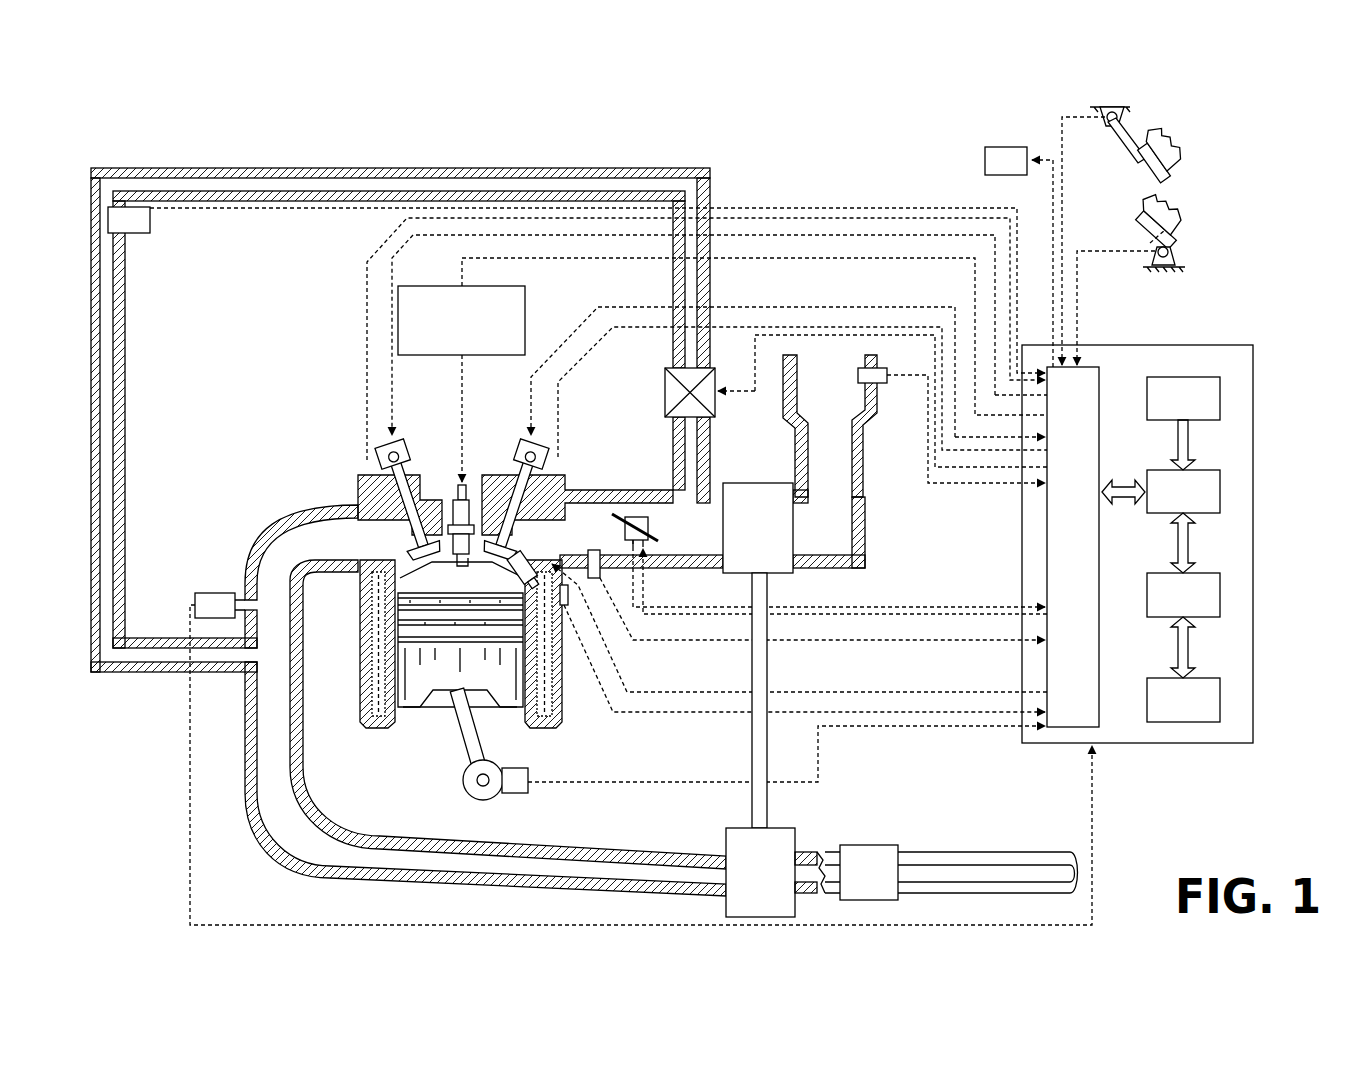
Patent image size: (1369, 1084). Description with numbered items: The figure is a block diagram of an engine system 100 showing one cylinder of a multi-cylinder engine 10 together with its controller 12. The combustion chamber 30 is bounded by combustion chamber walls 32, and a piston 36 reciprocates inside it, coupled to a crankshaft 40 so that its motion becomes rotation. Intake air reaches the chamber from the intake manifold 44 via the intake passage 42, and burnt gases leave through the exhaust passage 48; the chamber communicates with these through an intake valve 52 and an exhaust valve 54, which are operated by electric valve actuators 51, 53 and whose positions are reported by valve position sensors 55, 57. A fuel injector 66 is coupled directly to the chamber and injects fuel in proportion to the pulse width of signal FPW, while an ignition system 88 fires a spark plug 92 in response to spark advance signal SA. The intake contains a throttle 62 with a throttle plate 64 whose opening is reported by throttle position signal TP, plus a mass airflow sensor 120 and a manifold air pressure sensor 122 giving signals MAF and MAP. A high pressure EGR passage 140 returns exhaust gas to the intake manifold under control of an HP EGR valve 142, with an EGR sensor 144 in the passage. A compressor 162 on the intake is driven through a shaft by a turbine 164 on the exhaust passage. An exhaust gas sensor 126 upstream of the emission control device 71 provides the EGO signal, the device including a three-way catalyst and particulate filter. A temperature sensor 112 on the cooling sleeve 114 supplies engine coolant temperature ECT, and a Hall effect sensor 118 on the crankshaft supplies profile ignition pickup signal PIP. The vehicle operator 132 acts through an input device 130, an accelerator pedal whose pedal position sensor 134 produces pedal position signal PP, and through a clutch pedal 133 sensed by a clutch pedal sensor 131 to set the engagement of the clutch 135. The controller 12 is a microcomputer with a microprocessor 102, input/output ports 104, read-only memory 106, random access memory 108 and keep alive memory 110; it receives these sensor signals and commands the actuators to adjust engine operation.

The vehicle system 100 is at (138, 147).
The engine 10 is at (292, 432).
The controller 12 is at (1253, 345).
The combustion chamber 30 is at (372, 690).
The combustion chamber walls 32 is at (405, 717).
The piston 36 is at (443, 677).
The crankshaft 40 is at (468, 800).
The intake passage 42 is at (845, 405).
The intake manifold 44 is at (702, 545).
The exhaust passage 48 is at (340, 551).
The electric valve actuator 51 is at (517, 440).
The intake valve 52 is at (478, 548).
The electric valve actuator 53 is at (405, 440).
The exhaust valve 54 is at (405, 528).
The valve position sensor 55 is at (548, 470).
The valve position sensor 57 is at (378, 462).
The throttle 62 is at (645, 517).
The throttle plate 64 is at (630, 517).
The fuel injector 66 is at (532, 566).
The emission control device 71 is at (882, 885).
The ignition system 88 is at (437, 285).
The spark plug 92 is at (456, 495).
The microprocessor 102 is at (1220, 492).
The input/output ports 104 is at (1100, 372).
The read-only memory 106 is at (1220, 400).
The random access memory 108 is at (1220, 595).
The keep alive memory 110 is at (1220, 700).
The temperature sensor 112 is at (567, 650).
The cooling sleeve 114 is at (553, 712).
The Hall effect sensor 118 is at (527, 795).
The mass airflow sensor 120 is at (880, 383).
The manifold air pressure sensor 122 is at (600, 578).
The exhaust gas sensor 126 is at (195, 600).
The input device 130 is at (1140, 228).
The clutch pedal sensor 131 is at (1125, 117).
The vehicle operator 132 is at (1190, 150).
The clutch pedal 133 is at (1128, 168).
The pedal position sensor 134 is at (1185, 255).
The clutch 135 is at (985, 158).
The high pressure EGR passage 140 is at (527, 168).
The HP EGR valve 142 is at (665, 398).
The EGR sensor 144 is at (152, 233).
The compressor 162 is at (760, 483).
The turbine 164 is at (726, 835).
The spark advance signal SA is at (533, 261).
The pedal position signal PP is at (1078, 322).
The mass airflow signal MAF is at (936, 488).
The throttle position signal TP is at (930, 610).
The manifold air pressure signal MAP is at (935, 643).
The fuel pulse width signal FPW is at (630, 692).
The engine coolant temperature signal ECT is at (663, 716).
The profile ignition pickup signal PIP is at (822, 745).
The exhaust gas oxygen signal EGO is at (1095, 795).